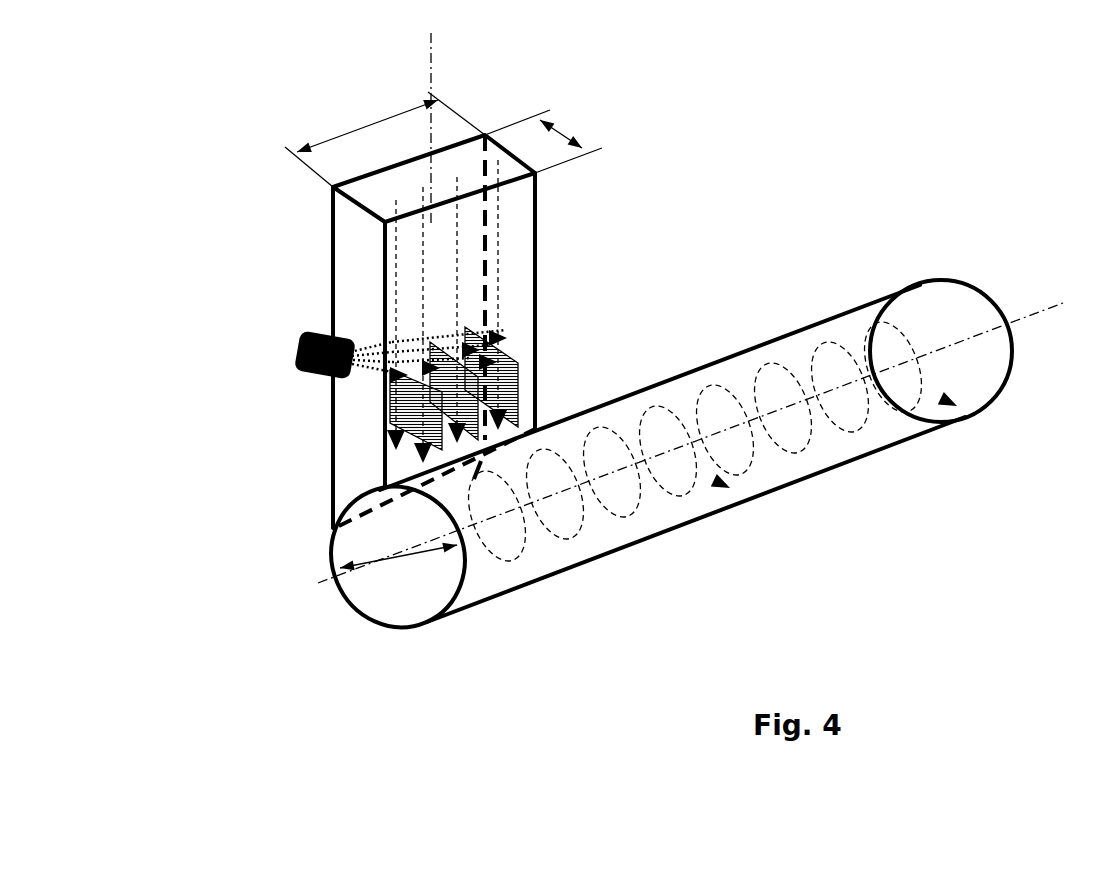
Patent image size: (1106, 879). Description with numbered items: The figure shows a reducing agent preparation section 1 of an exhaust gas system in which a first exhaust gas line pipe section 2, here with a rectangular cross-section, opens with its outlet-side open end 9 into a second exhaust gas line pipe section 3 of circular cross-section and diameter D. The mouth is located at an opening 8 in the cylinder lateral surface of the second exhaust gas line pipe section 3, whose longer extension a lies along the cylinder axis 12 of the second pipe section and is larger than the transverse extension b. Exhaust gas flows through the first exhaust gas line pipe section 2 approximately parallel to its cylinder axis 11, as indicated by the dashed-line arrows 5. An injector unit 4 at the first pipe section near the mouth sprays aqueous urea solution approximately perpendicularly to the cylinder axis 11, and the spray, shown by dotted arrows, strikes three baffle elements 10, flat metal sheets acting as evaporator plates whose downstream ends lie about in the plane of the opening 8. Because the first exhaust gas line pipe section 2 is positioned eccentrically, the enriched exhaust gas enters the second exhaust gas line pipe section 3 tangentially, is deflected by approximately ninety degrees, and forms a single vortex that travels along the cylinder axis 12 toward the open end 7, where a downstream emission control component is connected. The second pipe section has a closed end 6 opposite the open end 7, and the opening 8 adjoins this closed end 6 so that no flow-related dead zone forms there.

The reducing agent preparation section 1 is at (221, 246).
The first exhaust gas line pipe section 2 is at (537, 292).
The second exhaust gas line pipe section 3 is at (820, 477).
The injector unit 4 is at (297, 373).
The dashed-line arrows 5 is at (487, 240).
The closed end 6 is at (425, 605).
The open end 7 is at (987, 375).
The opening 8 is at (370, 500).
The outlet-side open end 9 is at (477, 467).
The baffle elements 10 is at (413, 400).
The cylinder axis of the first exhaust gas line pipe section 11 is at (432, 72).
The cylinder axis of the second exhaust gas line pipe section 12 is at (1035, 317).